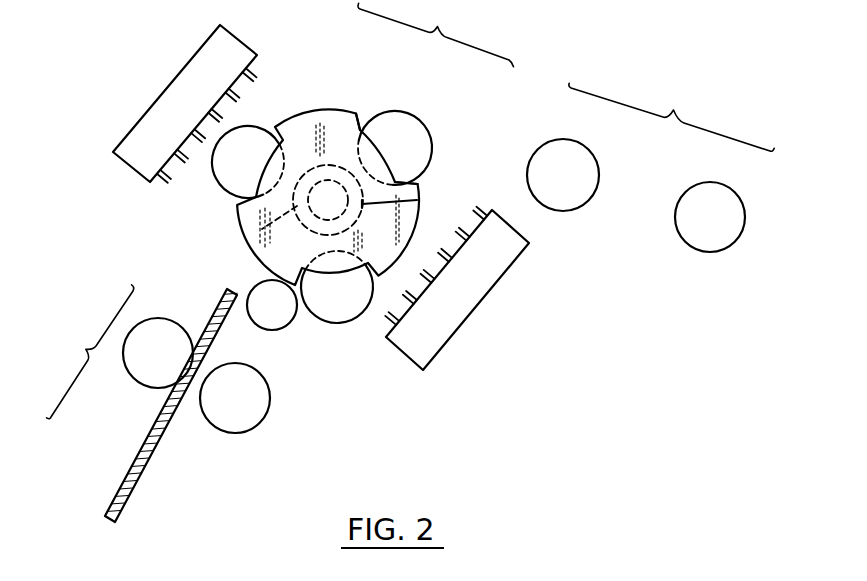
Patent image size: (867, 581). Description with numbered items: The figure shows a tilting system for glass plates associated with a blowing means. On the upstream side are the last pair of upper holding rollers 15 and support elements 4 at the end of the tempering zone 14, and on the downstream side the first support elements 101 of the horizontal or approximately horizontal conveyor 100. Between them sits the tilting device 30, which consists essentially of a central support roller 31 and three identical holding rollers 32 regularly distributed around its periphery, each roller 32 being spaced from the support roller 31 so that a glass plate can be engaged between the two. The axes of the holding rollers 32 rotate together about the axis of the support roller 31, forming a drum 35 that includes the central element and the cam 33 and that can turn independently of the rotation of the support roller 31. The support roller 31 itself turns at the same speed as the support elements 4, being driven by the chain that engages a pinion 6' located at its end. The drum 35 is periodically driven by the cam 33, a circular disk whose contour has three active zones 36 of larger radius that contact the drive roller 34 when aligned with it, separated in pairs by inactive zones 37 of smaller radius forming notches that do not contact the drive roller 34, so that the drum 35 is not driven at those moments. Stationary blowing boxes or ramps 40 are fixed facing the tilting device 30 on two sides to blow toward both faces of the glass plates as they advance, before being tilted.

The support elements 4 is at (242, 415).
The pinion 6' is at (282, 214).
The tempering zone 14 is at (142, 403).
The upper holding rollers 15 is at (155, 368).
The tilting device 30 is at (323, 92).
The support roller 31 is at (420, 233).
The holding rollers 32 is at (248, 148).
The cam 33 is at (346, 128).
The drive roller 34 is at (277, 318).
The drum 35 is at (435, 33).
The active zones 36 is at (427, 233).
The inactive zones 37 is at (333, 277).
The blowing boxes 40 is at (150, 133).
The horizontal conveyor 100 is at (671, 164).
The first support elements 101 is at (578, 170).